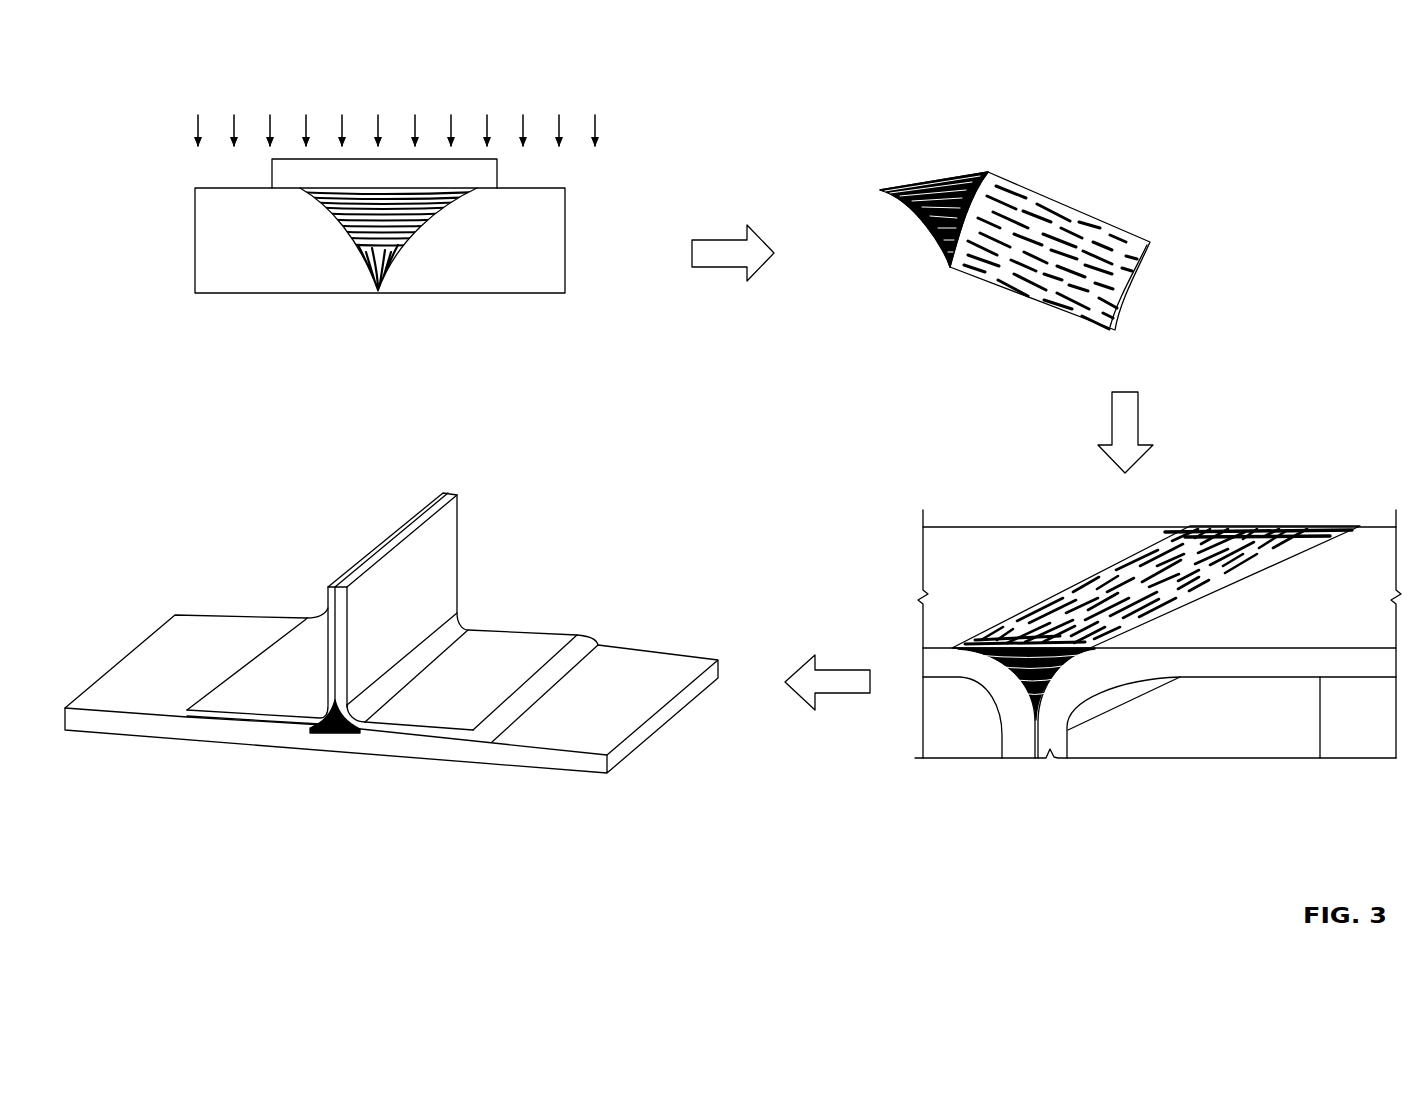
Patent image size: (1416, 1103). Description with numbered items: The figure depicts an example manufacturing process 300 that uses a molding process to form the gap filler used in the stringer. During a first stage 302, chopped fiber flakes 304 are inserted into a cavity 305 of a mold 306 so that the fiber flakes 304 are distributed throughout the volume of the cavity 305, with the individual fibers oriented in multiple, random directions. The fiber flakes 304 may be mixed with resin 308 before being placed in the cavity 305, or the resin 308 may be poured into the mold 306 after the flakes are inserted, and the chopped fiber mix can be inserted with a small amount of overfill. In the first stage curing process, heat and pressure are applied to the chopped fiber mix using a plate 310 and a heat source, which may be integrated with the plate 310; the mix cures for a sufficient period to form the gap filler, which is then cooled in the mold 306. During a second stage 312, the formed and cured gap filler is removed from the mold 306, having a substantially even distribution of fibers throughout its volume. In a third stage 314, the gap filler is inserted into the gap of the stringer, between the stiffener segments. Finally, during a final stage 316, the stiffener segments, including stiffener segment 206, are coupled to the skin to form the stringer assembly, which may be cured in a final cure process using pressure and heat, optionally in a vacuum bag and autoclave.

The manufacturing process 300 is at (1104, 41).
The first stage 302 is at (361, 196).
The chopped fiber flakes 304 is at (403, 223).
The cavity 305 is at (352, 257).
The mold 306 is at (213, 255).
The resin 308 is at (438, 193).
The plate 310 is at (438, 173).
The second stage 312 is at (1025, 223).
The third stage 314 is at (1134, 609).
The final stage 316 is at (391, 631).
The stiffener segment 206 is at (512, 640).